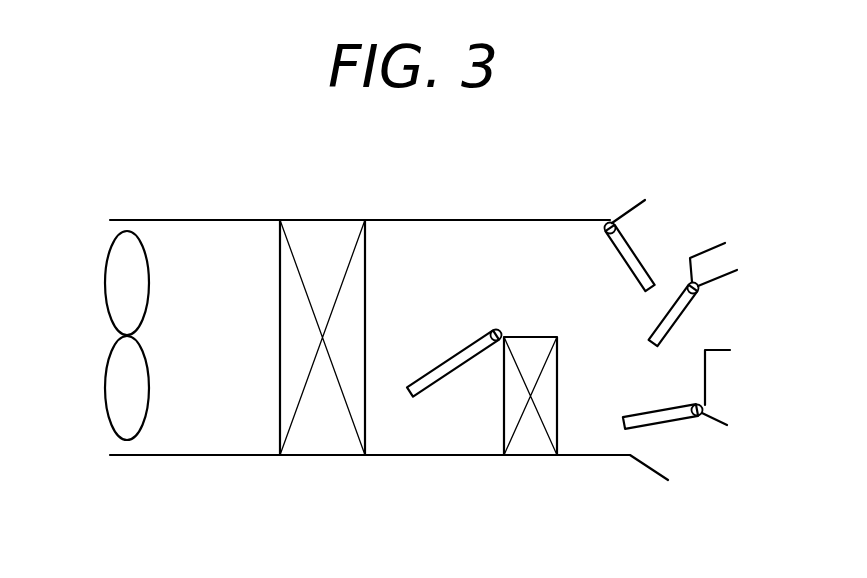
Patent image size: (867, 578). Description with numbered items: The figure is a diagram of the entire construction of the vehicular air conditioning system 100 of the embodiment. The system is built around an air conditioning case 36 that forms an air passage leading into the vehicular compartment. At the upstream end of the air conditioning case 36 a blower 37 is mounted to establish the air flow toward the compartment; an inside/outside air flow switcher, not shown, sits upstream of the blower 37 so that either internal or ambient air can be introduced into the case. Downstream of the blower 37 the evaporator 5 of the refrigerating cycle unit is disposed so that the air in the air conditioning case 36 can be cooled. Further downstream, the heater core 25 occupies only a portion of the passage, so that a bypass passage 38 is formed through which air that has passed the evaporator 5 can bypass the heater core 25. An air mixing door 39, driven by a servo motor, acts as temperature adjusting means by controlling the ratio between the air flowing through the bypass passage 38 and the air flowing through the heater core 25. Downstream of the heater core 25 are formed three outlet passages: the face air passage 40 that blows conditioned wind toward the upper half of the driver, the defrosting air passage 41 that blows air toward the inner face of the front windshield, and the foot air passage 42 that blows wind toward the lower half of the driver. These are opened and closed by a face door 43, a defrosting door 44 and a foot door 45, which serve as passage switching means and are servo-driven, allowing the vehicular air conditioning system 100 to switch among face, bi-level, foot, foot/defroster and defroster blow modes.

The vehicular air conditioning system 100 is at (381, 203).
The air conditioning case 36 is at (196, 456).
The blower 37 is at (105, 400).
The evaporator 5 is at (318, 445).
The bypass passage 38 is at (462, 278).
The air mixing door 39 is at (435, 388).
The heater core 25 is at (533, 445).
The defrosting door 44 is at (635, 248).
The defrosting air passage 41 is at (667, 240).
The face door 43 is at (668, 336).
The face air passage 40 is at (700, 320).
The foot door 45 is at (678, 420).
The foot air passage 42 is at (678, 455).